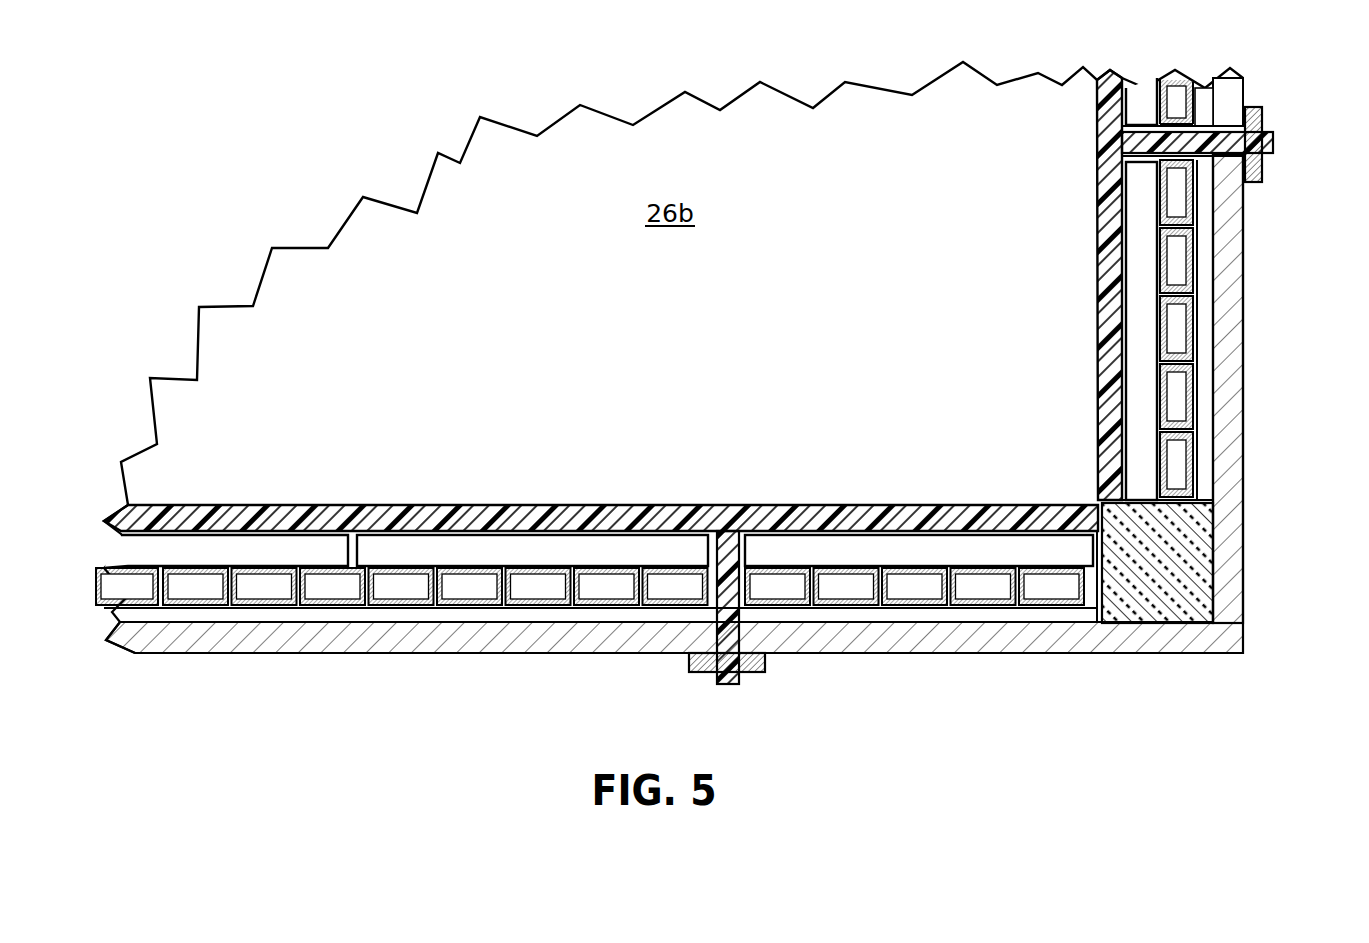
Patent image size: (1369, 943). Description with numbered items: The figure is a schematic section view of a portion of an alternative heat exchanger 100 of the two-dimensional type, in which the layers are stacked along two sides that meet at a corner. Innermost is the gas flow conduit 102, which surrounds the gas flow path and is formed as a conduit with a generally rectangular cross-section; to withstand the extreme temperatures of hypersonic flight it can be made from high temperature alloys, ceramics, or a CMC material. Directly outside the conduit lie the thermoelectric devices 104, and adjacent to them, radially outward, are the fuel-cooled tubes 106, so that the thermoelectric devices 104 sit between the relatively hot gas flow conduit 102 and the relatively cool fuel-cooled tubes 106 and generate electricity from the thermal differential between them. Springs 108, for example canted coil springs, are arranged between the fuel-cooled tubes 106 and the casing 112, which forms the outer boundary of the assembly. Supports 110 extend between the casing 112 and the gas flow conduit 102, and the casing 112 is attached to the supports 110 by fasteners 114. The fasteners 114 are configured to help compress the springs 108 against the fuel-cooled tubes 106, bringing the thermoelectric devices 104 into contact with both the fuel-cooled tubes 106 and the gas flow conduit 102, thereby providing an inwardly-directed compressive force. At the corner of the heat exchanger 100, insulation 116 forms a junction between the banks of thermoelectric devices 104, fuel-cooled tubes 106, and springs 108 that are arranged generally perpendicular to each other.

The heat exchanger 100 is at (406, 680).
The gas flow conduit 102 is at (258, 520).
The thermoelectric devices 104 is at (395, 553).
The fuel-cooled tubes 106 is at (851, 585).
The springs 108 is at (296, 610).
The supports 110 is at (715, 633).
The casing 112 is at (1233, 380).
The fasteners 114 is at (757, 662).
The insulation 116 is at (1147, 596).